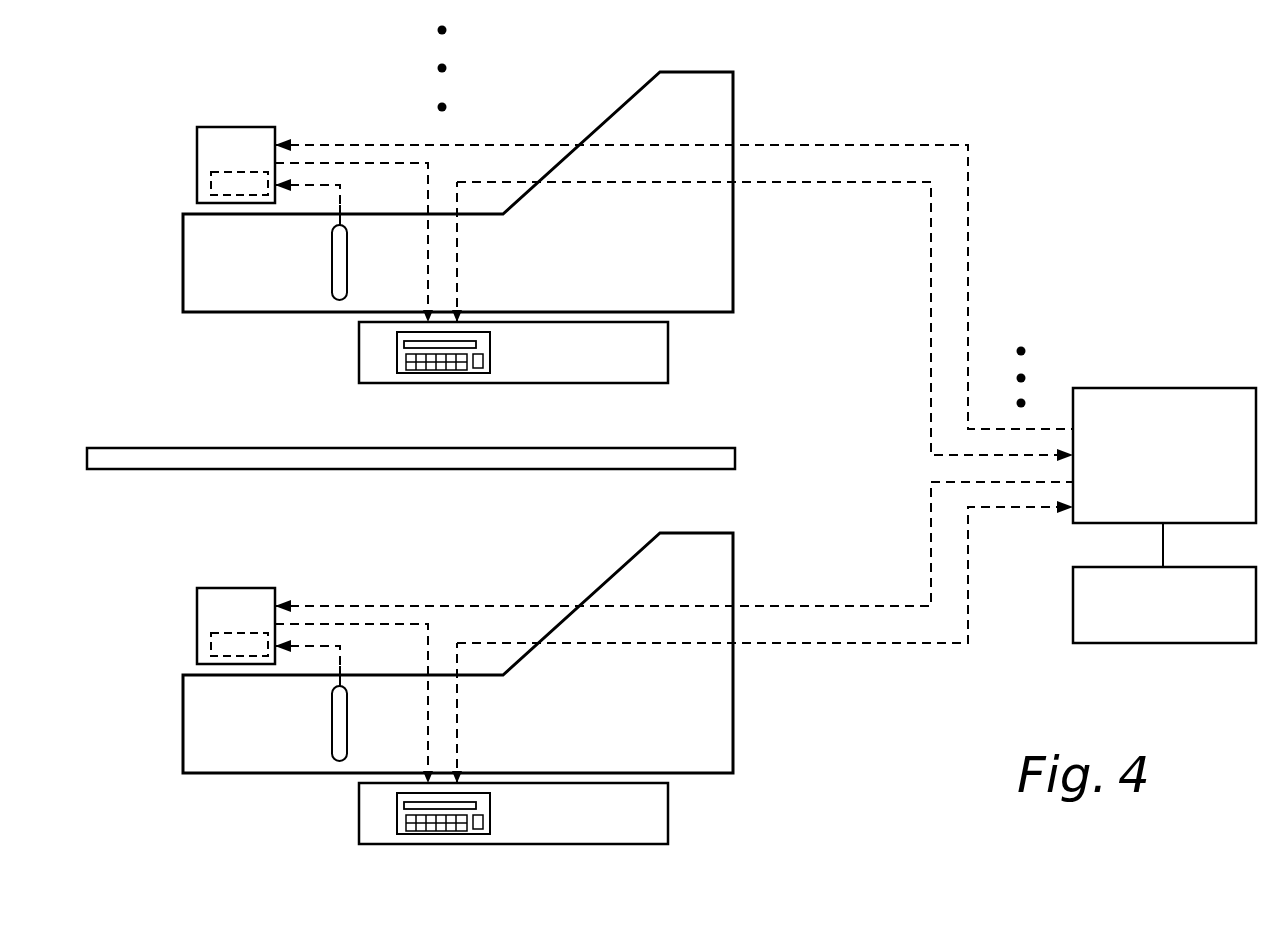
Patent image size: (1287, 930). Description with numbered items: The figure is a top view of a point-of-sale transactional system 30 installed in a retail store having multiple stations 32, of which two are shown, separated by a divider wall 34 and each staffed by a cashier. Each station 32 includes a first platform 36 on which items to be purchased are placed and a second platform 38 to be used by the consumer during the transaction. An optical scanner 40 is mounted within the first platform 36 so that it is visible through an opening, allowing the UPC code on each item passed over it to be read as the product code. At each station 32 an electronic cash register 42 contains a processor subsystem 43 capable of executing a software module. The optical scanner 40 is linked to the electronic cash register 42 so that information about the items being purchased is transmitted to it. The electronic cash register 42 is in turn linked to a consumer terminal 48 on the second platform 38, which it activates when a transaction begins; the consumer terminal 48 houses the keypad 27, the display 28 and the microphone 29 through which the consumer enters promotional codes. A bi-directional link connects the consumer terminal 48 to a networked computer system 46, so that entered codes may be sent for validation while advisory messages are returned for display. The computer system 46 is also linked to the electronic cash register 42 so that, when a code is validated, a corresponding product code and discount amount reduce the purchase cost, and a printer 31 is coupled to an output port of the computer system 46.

The point-of-sale transactional system 30 is at (1118, 90).
The station 32 is at (130, 338).
The electronic cash register 42 is at (226, 127).
The processor subsystem 43 is at (211, 185).
The optical scanner 40 is at (332, 262).
The first platform 36 is at (733, 232).
The second platform 38 is at (668, 352).
The display 28 is at (404, 344).
The consumer terminal 48 is at (490, 356).
The keypad 27 is at (406, 361).
The microphone 29 is at (478, 368).
The divider wall 34 is at (735, 459).
The computer system 46 is at (1100, 388).
The printer 31 is at (1073, 604).